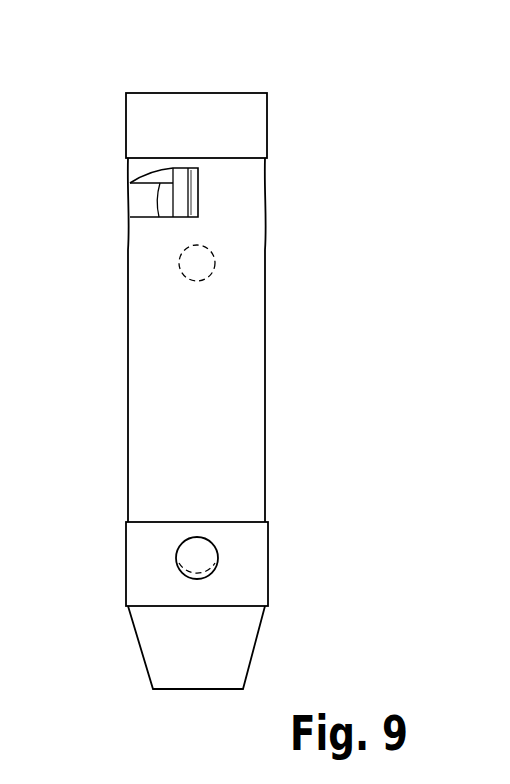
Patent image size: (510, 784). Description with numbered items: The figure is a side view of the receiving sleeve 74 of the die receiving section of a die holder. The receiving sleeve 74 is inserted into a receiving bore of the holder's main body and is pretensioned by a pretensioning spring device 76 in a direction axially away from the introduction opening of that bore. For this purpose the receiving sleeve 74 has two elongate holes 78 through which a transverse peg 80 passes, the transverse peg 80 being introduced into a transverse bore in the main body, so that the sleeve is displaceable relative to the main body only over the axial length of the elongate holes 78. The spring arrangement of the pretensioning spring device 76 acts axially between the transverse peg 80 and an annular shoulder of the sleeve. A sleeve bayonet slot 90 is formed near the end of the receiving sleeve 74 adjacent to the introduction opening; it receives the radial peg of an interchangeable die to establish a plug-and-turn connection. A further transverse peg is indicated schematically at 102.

The receiving sleeve 74 is at (302, 105).
The sleeve bayonet slot 90 is at (138, 196).
The transverse peg 102 is at (217, 264).
The pretensioning spring device 76 is at (302, 508).
The transverse peg 80 is at (192, 553).
The elongate holes 78 is at (178, 563).